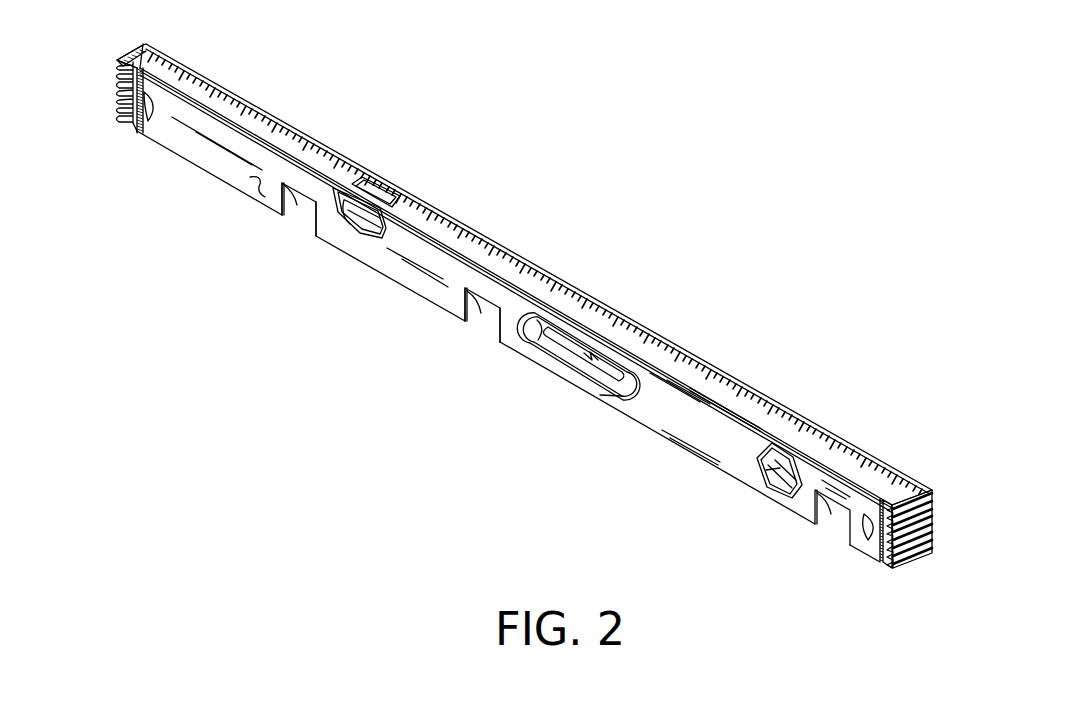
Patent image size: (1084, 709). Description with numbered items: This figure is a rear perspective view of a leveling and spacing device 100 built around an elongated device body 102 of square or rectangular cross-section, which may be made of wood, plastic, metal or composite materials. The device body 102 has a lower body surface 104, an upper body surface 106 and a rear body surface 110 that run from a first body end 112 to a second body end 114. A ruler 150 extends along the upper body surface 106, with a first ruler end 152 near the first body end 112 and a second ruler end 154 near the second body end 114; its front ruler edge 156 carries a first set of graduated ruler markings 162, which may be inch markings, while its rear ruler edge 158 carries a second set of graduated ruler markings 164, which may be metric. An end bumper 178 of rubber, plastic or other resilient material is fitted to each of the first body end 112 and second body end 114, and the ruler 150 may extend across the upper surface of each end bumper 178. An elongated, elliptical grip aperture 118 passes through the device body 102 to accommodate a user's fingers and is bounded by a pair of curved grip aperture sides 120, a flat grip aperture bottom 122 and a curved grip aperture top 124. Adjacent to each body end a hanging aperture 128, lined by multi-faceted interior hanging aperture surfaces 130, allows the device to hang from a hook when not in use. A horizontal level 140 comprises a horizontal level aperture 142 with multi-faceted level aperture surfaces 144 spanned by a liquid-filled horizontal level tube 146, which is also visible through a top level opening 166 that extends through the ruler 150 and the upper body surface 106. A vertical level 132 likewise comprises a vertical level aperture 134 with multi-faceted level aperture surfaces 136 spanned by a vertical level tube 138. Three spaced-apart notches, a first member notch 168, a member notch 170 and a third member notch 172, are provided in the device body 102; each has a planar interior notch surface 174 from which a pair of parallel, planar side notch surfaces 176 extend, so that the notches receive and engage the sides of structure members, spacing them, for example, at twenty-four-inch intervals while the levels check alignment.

The leveling and spacing device 100 is at (550, 143).
The device body 102 is at (212, 180).
The lower body surface 104 is at (410, 292).
The upper body surface 106 is at (470, 250).
The rear body surface 110 is at (254, 183).
The first body end 112 is at (883, 563).
The second body end 114 is at (136, 102).
The grip aperture 118 is at (579, 376).
The grip aperture sides 120 is at (598, 403).
The grip aperture bottom 122 is at (598, 363).
The grip aperture top 124 is at (548, 328).
The hanging aperture 128 is at (153, 113).
The interior hanging aperture surfaces 130 is at (128, 57).
The vertical level 132 is at (793, 456).
The vertical level aperture 134 is at (788, 497).
The level aperture surfaces 136 is at (783, 492).
The vertical level tube 138 is at (790, 470).
The horizontal level 140 is at (390, 231).
The horizontal level aperture 142 is at (355, 227).
The level aperture surfaces 144 is at (370, 230).
The horizontal level tube 146 is at (392, 190).
The ruler 150 is at (240, 93).
The first ruler end 152 is at (910, 488).
The second ruler end 154 is at (157, 57).
The front ruler edge 156 is at (648, 378).
The rear ruler edge 158 is at (640, 402).
The first set of graduated ruler markings 162 is at (703, 392).
The second set of graduated ruler markings 164 is at (730, 412).
The top level opening 166 is at (373, 180).
The first member notch 168 is at (833, 527).
The member notch 170 is at (482, 330).
The third member notch 172 is at (301, 220).
The interior notch surface 174 is at (284, 183).
The side notch surfaces 176 is at (314, 226).
The end bumper 178 is at (116, 86).